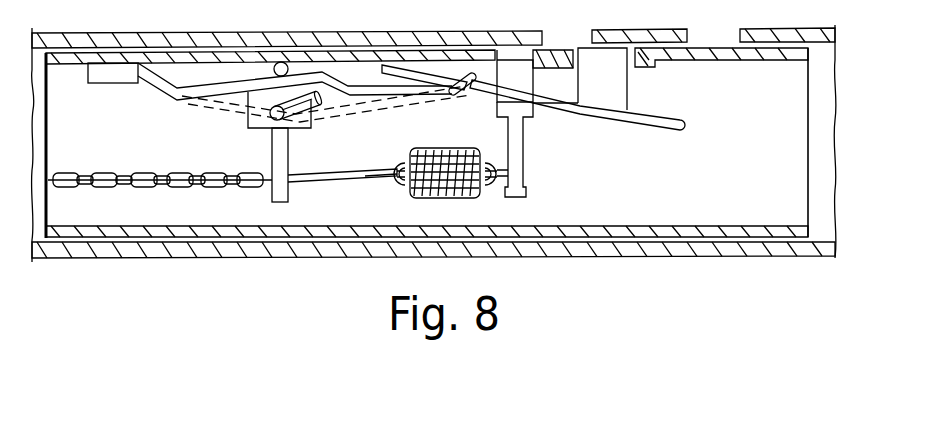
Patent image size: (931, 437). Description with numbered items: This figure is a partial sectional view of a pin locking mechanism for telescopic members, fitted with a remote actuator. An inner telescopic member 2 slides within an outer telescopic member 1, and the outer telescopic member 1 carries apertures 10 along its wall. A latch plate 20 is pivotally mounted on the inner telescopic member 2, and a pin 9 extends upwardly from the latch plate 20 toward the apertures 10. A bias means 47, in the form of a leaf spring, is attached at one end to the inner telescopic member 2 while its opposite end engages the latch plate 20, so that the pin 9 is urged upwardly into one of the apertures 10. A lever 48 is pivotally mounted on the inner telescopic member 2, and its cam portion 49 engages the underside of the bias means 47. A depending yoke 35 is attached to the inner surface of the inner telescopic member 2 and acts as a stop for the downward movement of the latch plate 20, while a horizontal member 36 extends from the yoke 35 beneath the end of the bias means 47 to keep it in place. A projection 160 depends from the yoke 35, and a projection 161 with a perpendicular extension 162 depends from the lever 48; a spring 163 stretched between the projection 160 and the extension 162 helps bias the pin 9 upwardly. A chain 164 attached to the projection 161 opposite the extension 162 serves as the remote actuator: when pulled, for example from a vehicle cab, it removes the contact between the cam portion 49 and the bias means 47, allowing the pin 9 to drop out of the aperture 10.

The outer telescopic member 1 is at (790, 256).
The inner telescopic member 2 is at (776, 40).
The pin 9 is at (593, 63).
The apertures 10 is at (718, 40).
The latch plate 20 is at (648, 116).
The depending yoke 35 is at (533, 112).
The horizontal member 36 is at (496, 100).
The bias means 47 is at (177, 98).
The lever 48 is at (272, 152).
The cam portion 49 is at (302, 128).
The projection 160 is at (527, 168).
The projection 161 is at (289, 190).
The perpendicular extension 162 is at (370, 182).
The spring 163 is at (467, 198).
The chain 164 is at (143, 172).